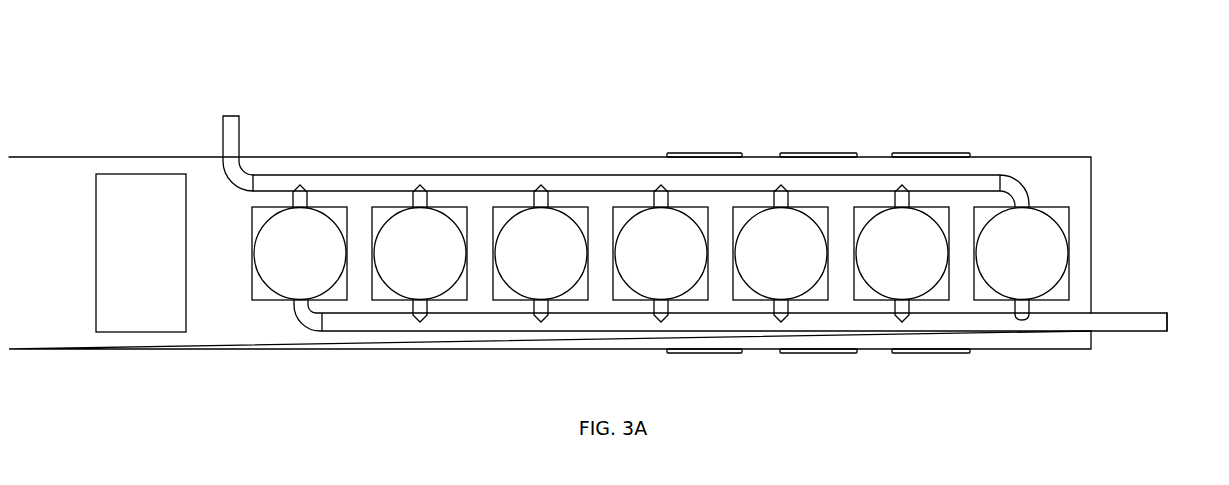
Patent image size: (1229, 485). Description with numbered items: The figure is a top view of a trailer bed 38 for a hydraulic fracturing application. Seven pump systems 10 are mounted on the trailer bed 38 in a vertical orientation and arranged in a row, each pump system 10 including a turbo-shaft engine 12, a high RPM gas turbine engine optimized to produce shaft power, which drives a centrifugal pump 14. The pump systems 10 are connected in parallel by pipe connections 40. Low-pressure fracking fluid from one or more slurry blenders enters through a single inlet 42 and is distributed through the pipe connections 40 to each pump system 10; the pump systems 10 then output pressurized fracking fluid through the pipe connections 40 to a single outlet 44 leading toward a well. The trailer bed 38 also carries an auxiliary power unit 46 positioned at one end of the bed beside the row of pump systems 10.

The pump system 10 is at (317, 211).
The turbo-shaft engine 12 is at (295, 285).
The centrifugal pump 14 is at (262, 290).
The trailer bed 38 is at (48, 172).
The pipe connections 40 is at (427, 173).
The single inlet 42 is at (230, 115).
The single outlet 44 is at (1167, 330).
The auxiliary power unit 46 is at (154, 190).